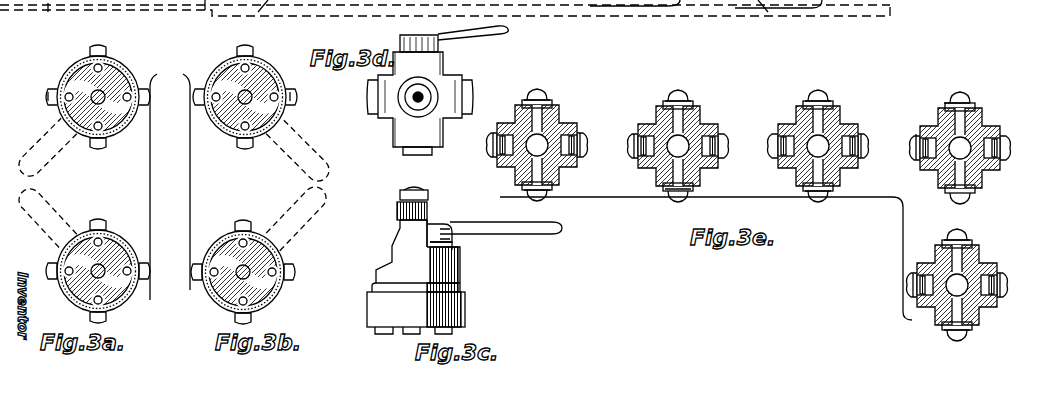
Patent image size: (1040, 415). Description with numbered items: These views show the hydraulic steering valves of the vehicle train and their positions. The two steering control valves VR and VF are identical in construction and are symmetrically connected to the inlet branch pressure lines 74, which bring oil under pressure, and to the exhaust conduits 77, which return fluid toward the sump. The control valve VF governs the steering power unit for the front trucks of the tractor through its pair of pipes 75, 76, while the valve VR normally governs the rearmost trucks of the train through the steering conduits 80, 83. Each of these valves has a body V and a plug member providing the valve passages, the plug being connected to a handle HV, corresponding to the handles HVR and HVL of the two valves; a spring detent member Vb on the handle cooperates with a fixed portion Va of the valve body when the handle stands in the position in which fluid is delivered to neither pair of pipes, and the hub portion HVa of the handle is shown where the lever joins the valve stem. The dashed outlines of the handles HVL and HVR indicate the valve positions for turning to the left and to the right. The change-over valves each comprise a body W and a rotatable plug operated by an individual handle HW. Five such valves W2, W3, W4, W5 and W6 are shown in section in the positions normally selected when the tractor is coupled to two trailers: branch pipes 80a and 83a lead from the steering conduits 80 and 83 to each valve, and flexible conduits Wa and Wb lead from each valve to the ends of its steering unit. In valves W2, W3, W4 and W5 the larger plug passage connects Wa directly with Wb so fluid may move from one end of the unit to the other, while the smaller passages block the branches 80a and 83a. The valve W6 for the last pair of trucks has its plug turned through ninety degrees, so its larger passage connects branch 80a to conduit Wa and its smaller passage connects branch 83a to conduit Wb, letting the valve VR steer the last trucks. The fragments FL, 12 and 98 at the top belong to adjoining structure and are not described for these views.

In FIG. 3A, the steering control valve VR is at (110, 75).
In FIG. 3B, the steering control valve VR is at (258, 72).
In FIG. 3A, the steering control valve VF is at (128, 283).
In FIG. 3B, the steering control valve VF is at (272, 284).
In FIG. 3D, the steering control valve VF is at (45, 16).
In FIG. 3A, the handle HVR is at (40, 143).
In FIG. 3B, the handle HVR is at (306, 149).
In FIG. 3A, the handle HVL is at (48, 213).
In FIG. 3B, the handle HVL is at (318, 220).
In FIG. 3A, the branch pressure line 74 is at (104, 52).
In FIG. 3B, the branch pressure line 74 is at (248, 52).
In FIG. 3A, the pipe 75 is at (142, 262).
In FIG. 3B, the pipe 75 is at (290, 264).
In FIG. 3A, the pipe 76 is at (52, 265).
In FIG. 3B, the pipe 76 is at (202, 262).
In FIG. 3A, the exhaust conduit 77 is at (104, 142).
In FIG. 3B, the exhaust conduit 77 is at (236, 140).
In FIG. 3A, the steering conduit 80 is at (159, 180).
In FIG. 3B, the steering conduit 80 is at (292, 97).
In FIG. 3A, the steering conduit 83 is at (48, 92).
In FIG. 3B, the steering conduit 83 is at (193, 171).
In FIG. 3C, the valve body V is at (453, 272).
In FIG. 3C, the fixed portion Va is at (443, 230).
In FIG. 3C, the spring detent member Vb is at (458, 250).
In FIG. 3C, the handle HV is at (543, 234).
In FIG. 3C, the handle hub HVa is at (450, 226).
In FIG. 3D, the change-over valve body W is at (460, 80).
In FIG. 3D, the handle HW is at (512, 30).
In FIG. 3E, the change-over valve W2 is at (560, 108).
In FIG. 3E, the change-over valve W3 is at (700, 110).
In FIG. 3E, the change-over valve W4 is at (838, 108).
In FIG. 3E, the change-over valve W5 is at (976, 110).
In FIG. 3E, the change-over valve W6 is at (975, 250).
In FIG. 3E, the flexible conduit Wa is at (526, 193).
In FIG. 3E, the flexible conduit Wb is at (582, 136).
In FIG. 3E, the branch pipe 80a is at (494, 130).
In FIG. 3E, the branch pipe 83a is at (545, 96).
In FIG. 3D, the fuel line FL is at (194, 15).
In FIG. 3D, the frame member 12 is at (708, 2).
In FIG. 3D, the tank 98 is at (767, 16).